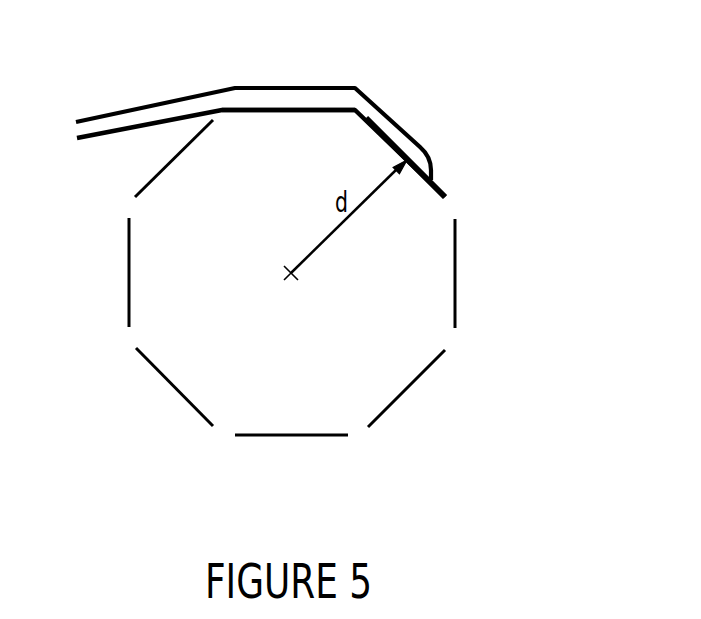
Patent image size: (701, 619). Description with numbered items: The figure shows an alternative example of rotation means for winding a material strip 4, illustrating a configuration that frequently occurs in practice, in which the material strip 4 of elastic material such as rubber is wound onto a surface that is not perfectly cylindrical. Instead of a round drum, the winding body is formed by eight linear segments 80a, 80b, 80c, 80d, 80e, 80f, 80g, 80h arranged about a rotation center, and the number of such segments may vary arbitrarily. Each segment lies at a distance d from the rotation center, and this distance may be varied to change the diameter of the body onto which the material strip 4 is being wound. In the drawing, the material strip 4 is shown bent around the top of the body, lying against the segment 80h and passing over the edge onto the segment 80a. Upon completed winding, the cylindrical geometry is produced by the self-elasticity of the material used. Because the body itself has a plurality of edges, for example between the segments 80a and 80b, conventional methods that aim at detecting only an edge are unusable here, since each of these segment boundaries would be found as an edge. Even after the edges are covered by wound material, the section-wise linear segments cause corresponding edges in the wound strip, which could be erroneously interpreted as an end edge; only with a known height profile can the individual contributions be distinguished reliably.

The material strip 4 is at (150, 115).
The linear segment 80a is at (445, 193).
The linear segment 80b is at (455, 275).
The linear segment 80c is at (408, 390).
The linear segment 80d is at (293, 435).
The linear segment 80e is at (174, 390).
The linear segment 80f is at (129, 275).
The linear segment 80g is at (170, 157).
The linear segment 80h is at (258, 108).